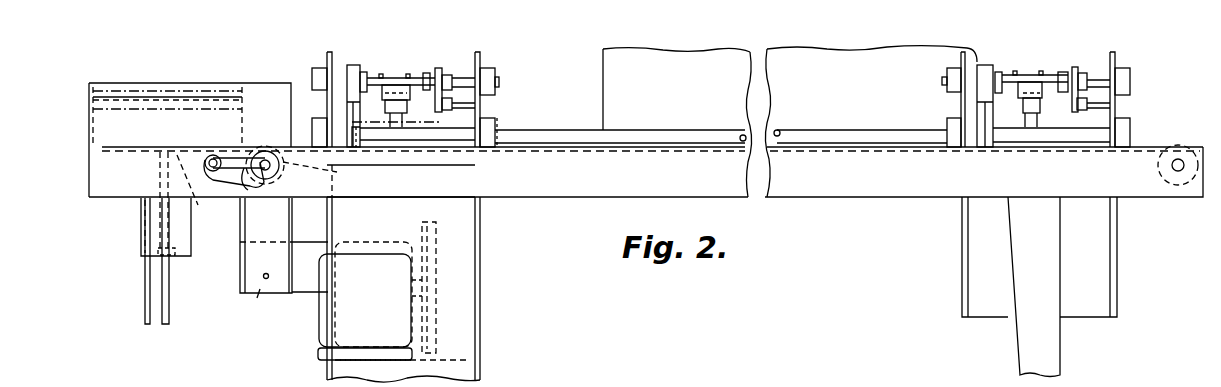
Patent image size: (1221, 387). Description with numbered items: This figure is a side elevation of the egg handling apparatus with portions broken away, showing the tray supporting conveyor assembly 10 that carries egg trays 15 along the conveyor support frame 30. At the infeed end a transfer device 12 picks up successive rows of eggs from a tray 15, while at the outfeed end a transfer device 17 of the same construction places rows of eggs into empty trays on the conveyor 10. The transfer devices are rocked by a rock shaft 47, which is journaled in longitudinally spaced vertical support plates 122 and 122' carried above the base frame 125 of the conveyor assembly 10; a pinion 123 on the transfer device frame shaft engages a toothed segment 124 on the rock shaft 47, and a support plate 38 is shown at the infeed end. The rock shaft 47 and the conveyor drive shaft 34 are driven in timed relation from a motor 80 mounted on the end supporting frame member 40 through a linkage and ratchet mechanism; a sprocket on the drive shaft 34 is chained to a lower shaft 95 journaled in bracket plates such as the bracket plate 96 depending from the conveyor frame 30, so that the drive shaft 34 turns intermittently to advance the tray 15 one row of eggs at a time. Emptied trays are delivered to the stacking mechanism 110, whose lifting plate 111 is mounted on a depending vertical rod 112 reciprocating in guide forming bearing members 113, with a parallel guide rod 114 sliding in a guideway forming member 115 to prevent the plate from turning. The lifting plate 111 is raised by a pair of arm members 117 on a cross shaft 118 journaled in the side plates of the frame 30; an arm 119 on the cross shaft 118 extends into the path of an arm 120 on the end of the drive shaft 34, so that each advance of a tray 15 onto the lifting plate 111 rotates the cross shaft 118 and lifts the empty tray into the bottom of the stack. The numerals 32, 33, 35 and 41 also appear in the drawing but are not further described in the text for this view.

The conveyor assembly 10 is at (875, 203).
The transfer device 12 is at (408, 70).
The tray 15 is at (165, 93).
The transfer device 17 is at (1052, 75).
The conveyor support frame 30 is at (880, 150).
The connecting rod 32 is at (302, 166).
The crank disk 33 is at (1158, 167).
The conveyor drive shaft 34 is at (278, 168).
The crank pin 35 is at (1180, 171).
The support plate 38 is at (327, 57).
The end supporting frame member 40 is at (482, 281).
The collar 41 is at (369, 76).
The rock shaft 47 is at (832, 133).
The motor 80 is at (322, 323).
The shaft 95 is at (263, 277).
The bracket plate 96 is at (257, 305).
The stacking mechanism 110 is at (120, 78).
The lifting plate 111 is at (148, 147).
The vertical rod 112 is at (176, 311).
The guide forming bearing members 113 is at (185, 246).
The guide rod 114 is at (145, 319).
The guideway forming member 115 is at (141, 250).
The arm members 117 is at (196, 201).
The cross shaft 118 is at (214, 155).
The arm 119 is at (250, 185).
The arm 120 is at (243, 158).
The support plate 122 is at (1134, 96).
The support plate 122' is at (936, 98).
The pinion 123 is at (995, 70).
The toothed segment 124 is at (990, 105).
The base frame 125 is at (1020, 326).